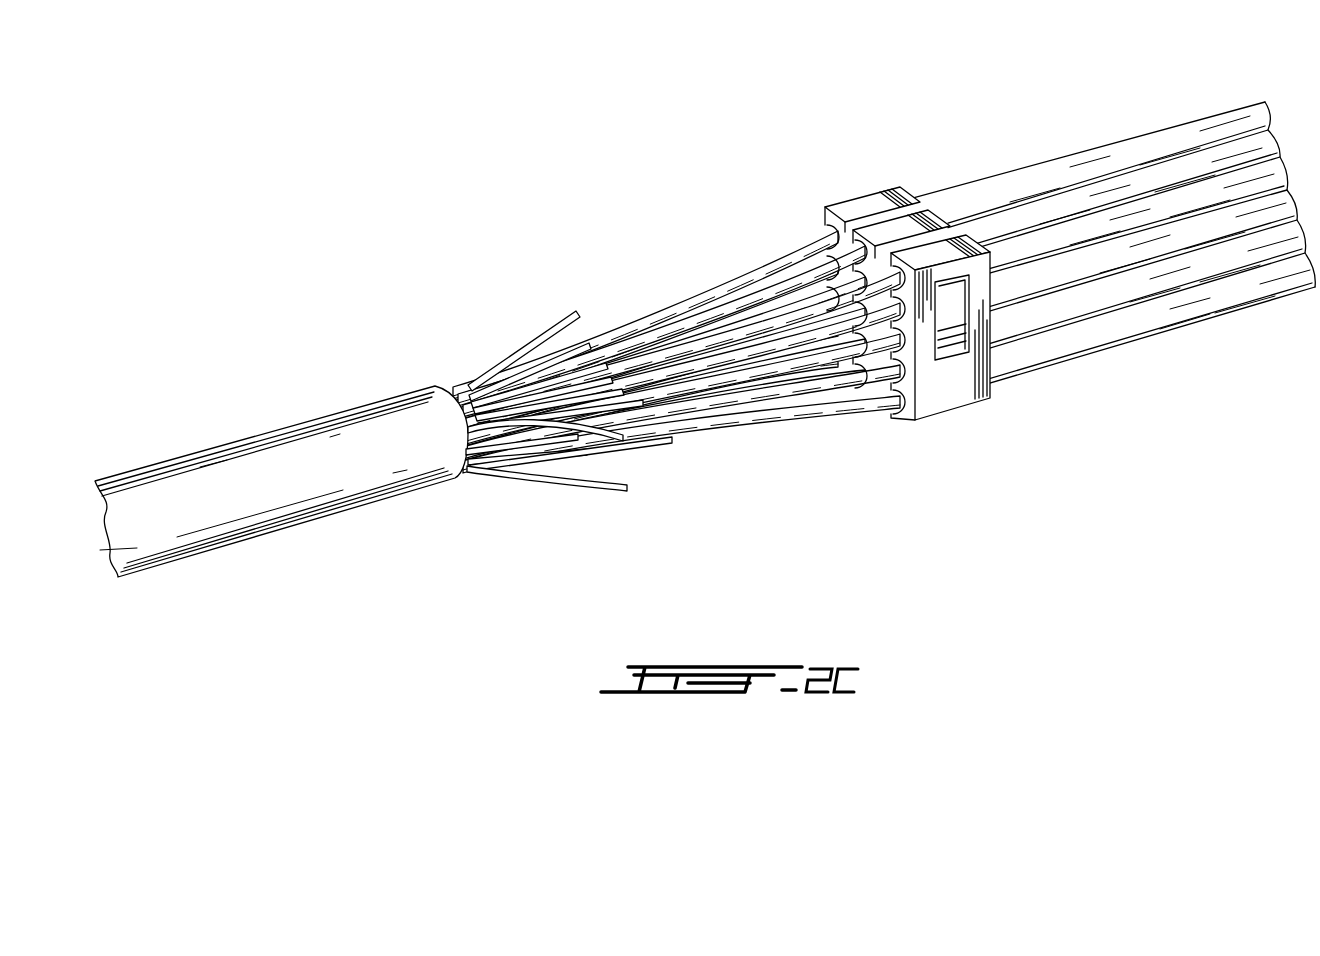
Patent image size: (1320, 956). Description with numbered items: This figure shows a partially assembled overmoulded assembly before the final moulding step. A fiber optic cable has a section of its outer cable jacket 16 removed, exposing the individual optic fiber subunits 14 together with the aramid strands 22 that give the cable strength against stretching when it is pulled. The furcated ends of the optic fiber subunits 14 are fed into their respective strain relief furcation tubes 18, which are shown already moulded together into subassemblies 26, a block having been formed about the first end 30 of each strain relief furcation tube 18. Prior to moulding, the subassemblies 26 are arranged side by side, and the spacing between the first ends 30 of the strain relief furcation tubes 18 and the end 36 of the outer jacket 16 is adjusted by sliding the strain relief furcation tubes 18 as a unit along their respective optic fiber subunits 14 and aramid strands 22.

The optic fiber subunit 14 is at (708, 323).
The outer cable jacket 16 is at (360, 432).
The strain relief furcation tube 18 is at (1075, 203).
The aramid strands 22 is at (485, 408).
The subassembly 26 is at (955, 388).
The first end 30 is at (829, 236).
The end 36 is at (470, 471).